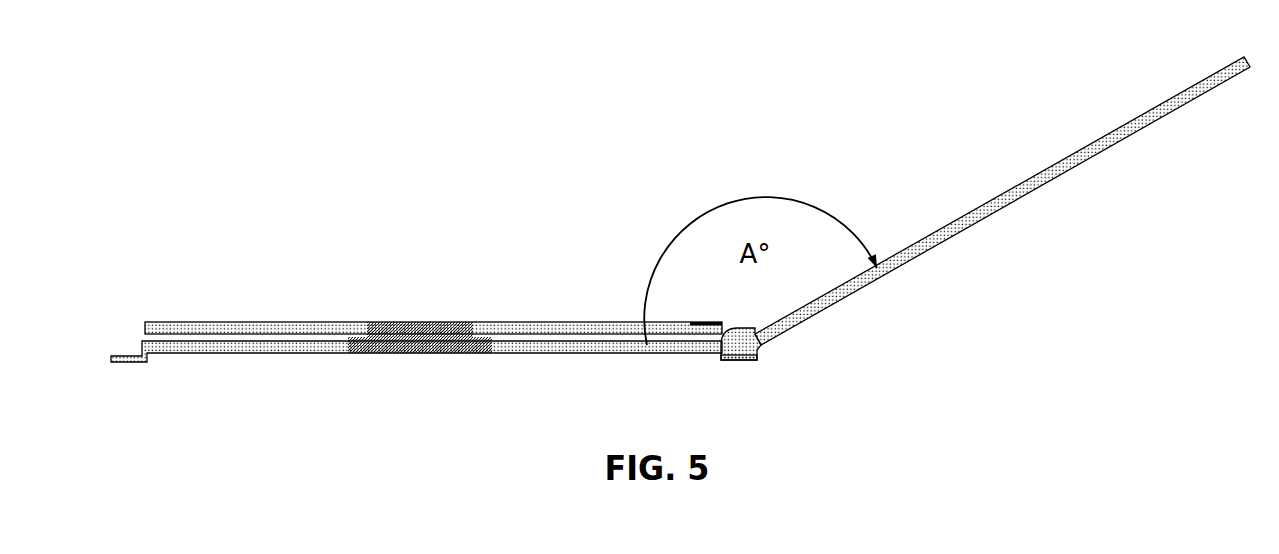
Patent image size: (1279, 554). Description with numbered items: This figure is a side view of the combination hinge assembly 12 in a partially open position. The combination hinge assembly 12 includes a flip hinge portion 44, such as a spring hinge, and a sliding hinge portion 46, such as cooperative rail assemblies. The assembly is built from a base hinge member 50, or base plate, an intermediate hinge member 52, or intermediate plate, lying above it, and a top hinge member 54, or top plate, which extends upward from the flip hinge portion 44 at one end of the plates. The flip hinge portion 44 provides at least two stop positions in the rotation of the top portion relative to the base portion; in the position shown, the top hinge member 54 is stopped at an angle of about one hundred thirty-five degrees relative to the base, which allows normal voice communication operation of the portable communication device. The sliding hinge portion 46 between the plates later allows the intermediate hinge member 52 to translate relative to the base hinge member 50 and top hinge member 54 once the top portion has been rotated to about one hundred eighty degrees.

The combination hinge assembly 12 is at (324, 105).
The flip hinge portion 44 is at (766, 396).
The sliding hinge portion 46 is at (432, 398).
The base hinge member 50 is at (192, 352).
The intermediate hinge member 52 is at (271, 323).
The top hinge member 54 is at (1053, 177).